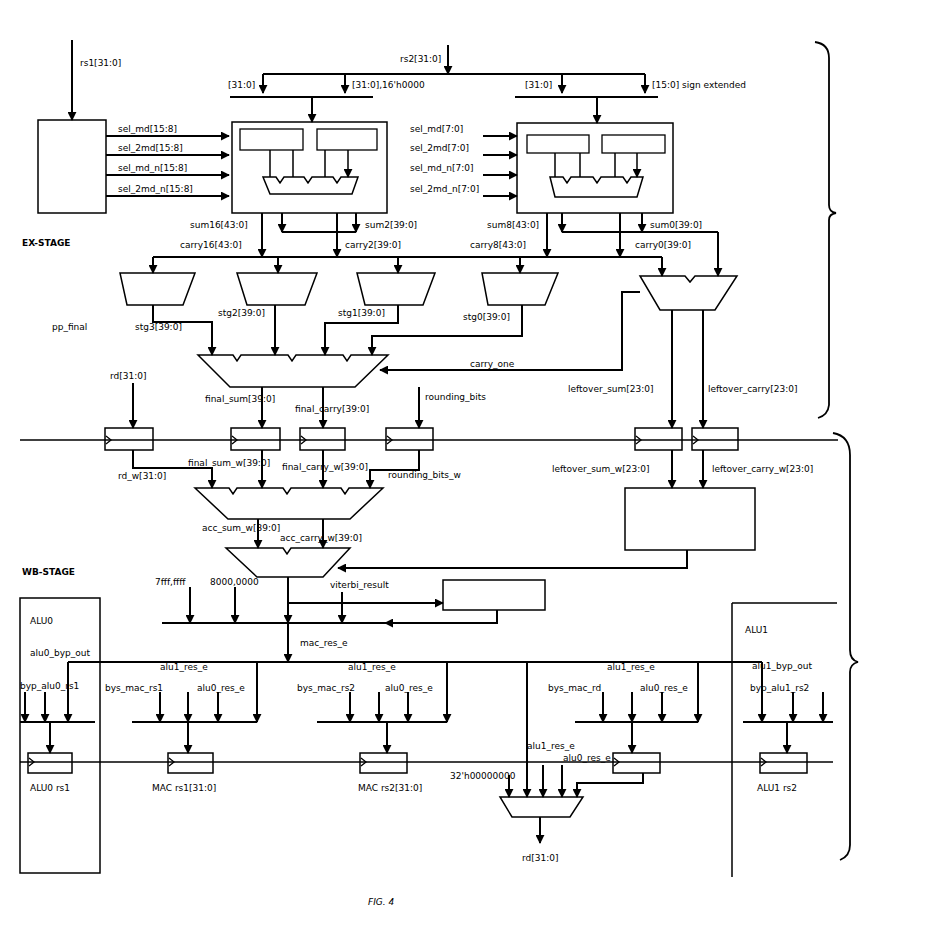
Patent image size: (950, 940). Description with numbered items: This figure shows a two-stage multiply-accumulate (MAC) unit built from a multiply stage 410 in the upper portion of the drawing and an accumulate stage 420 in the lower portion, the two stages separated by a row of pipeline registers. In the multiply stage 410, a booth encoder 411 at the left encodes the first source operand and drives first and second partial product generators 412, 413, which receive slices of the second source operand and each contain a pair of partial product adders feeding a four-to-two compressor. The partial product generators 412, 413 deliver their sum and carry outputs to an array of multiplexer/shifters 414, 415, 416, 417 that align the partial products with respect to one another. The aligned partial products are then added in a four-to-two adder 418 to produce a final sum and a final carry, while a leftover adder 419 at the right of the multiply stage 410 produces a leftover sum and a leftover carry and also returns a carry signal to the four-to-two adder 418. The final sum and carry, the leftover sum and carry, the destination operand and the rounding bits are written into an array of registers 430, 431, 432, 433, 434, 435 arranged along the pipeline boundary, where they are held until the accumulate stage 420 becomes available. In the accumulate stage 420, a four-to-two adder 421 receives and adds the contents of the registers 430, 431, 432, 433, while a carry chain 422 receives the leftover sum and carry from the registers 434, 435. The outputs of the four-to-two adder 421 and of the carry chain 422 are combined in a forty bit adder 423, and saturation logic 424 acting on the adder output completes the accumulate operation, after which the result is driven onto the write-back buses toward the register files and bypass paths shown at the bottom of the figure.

The multiply stage 410 is at (841, 230).
The booth encoder 411 is at (78, 208).
The first partial product generator 412 is at (309, 167).
The second partial product generator 413 is at (595, 169).
The multiplexer/shifter 414 is at (186, 300).
The multiplexer/shifter 415 is at (318, 294).
The multiplexer/shifter 416 is at (426, 300).
The multiplexer/shifter 417 is at (548, 300).
The 4:2 adder 418 is at (293, 371).
The leftover adder 419 is at (688, 293).
The accumulate stage 420 is at (858, 646).
The 4:2 adder 421 is at (340, 515).
The carry chain 422 is at (736, 546).
The 40 bit adder 423 is at (340, 557).
The saturation logic 424 is at (545, 604).
The register 430 is at (153, 432).
The register 431 is at (237, 429).
The register 432 is at (345, 430).
The register 433 is at (433, 431).
The register 434 is at (635, 428).
The register 435 is at (730, 428).